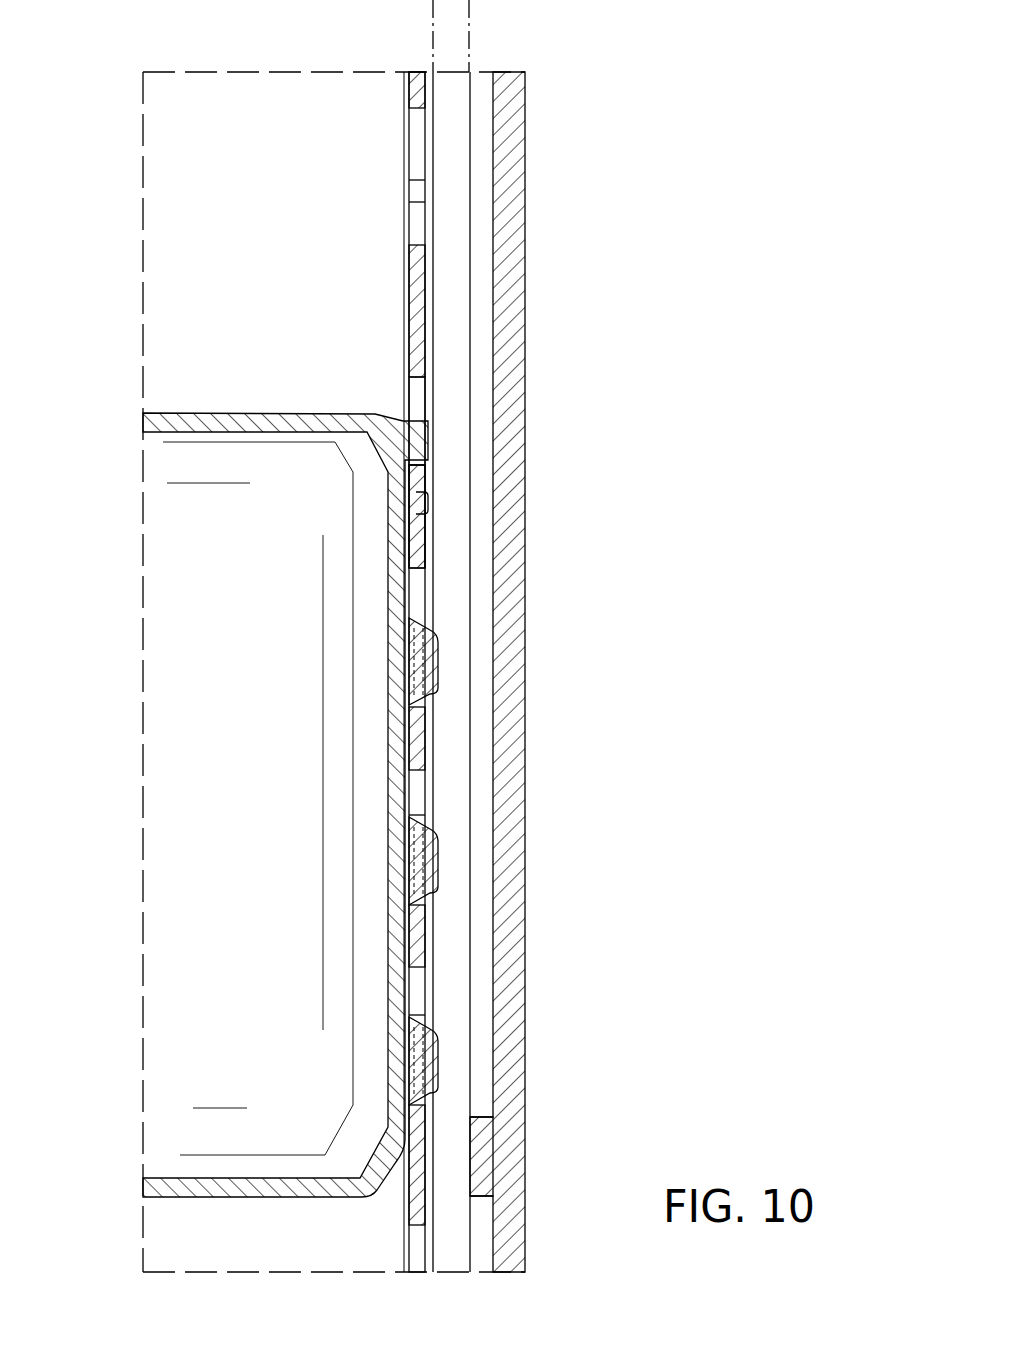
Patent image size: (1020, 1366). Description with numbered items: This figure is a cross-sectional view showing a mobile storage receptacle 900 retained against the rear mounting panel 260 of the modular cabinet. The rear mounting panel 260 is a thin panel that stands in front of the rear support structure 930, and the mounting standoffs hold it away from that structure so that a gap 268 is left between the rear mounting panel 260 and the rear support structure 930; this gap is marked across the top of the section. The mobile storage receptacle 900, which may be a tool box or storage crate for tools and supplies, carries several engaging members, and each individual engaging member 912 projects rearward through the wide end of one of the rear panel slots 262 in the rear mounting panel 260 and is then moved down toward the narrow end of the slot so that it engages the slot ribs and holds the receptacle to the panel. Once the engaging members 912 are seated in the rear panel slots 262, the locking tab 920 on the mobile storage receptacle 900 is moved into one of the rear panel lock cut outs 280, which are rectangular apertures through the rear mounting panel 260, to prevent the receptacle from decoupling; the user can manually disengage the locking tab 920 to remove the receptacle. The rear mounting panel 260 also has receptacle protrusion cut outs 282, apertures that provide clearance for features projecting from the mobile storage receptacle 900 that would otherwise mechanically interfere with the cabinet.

The gap 268 is at (375, 16).
The rear panel slots 262 is at (416, 143).
The rear mounting panel 260 is at (425, 313).
The receptacle protrusion cut outs 282 is at (425, 400).
The locking tab 920 is at (428, 495).
The rear panel lock cut outs 280 is at (428, 512).
The individual engaging member 912 is at (432, 650).
The mobile storage receptacle 900 is at (165, 413).
The rear support structure 930 is at (527, 1284).